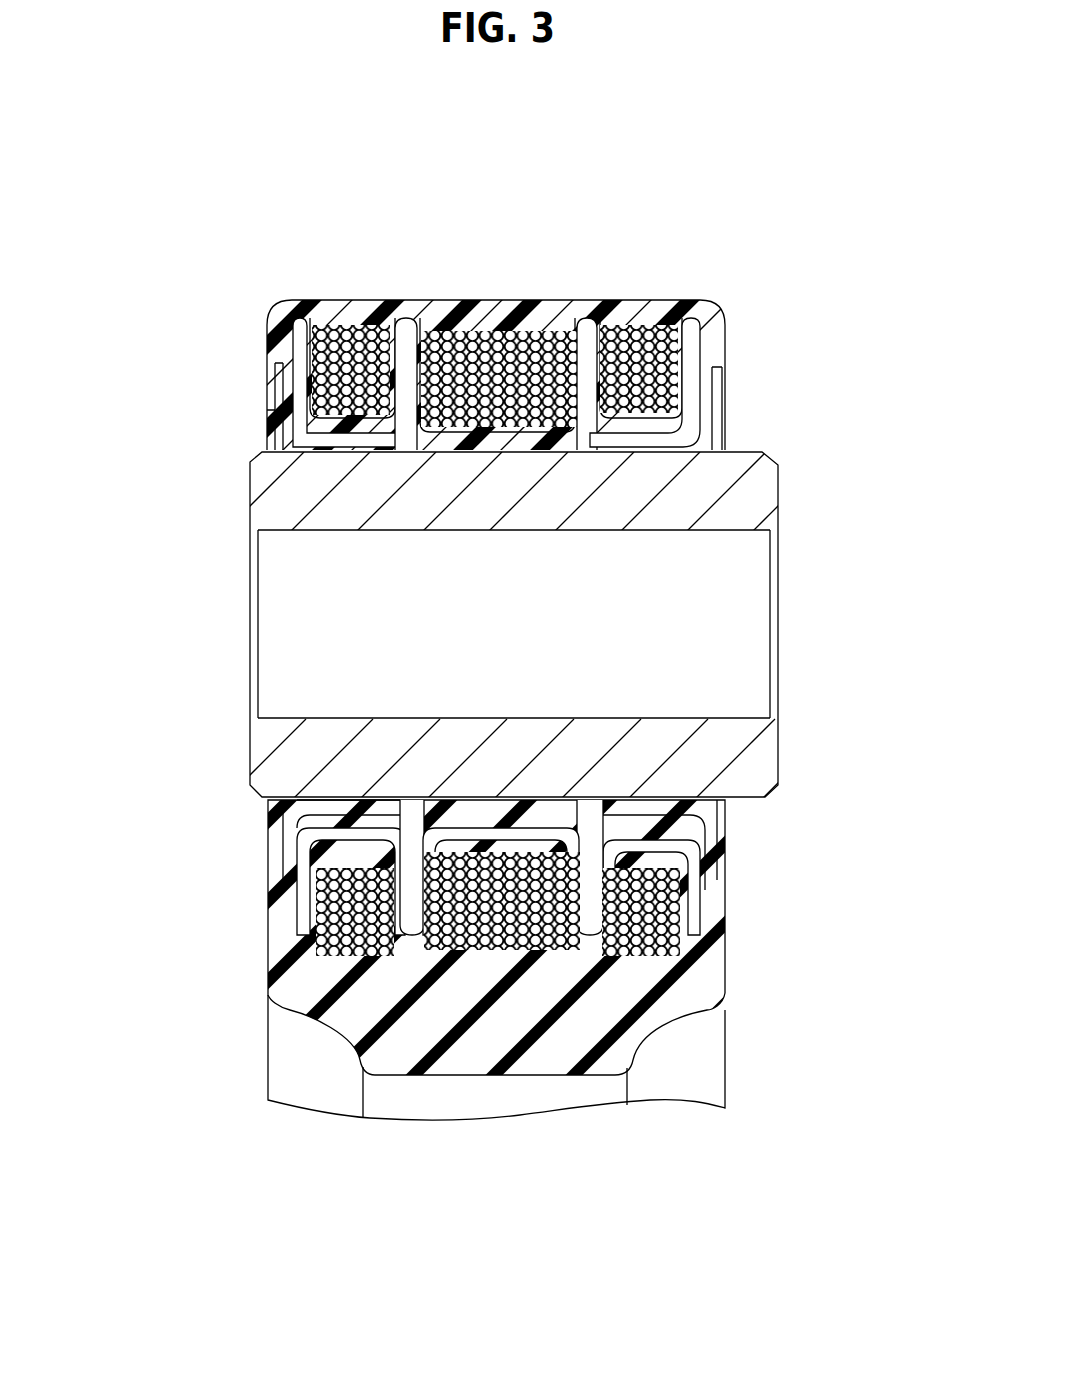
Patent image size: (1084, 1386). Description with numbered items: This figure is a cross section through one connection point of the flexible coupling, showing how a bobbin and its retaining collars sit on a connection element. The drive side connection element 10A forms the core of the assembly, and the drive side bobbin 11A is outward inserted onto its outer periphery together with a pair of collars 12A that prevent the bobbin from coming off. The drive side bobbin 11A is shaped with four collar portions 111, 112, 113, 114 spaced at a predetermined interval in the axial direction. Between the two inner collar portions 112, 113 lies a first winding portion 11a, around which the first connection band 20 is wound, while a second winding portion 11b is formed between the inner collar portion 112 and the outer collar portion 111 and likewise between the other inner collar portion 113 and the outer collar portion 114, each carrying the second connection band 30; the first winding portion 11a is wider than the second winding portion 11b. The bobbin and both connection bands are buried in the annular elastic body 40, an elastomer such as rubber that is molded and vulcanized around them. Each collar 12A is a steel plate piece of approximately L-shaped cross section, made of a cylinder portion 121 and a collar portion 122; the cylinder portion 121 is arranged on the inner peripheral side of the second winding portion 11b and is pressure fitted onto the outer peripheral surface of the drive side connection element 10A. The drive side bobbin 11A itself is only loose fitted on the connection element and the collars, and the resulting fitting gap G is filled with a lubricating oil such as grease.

The drive side connection element 10A is at (755, 755).
The drive side bobbin 11A is at (712, 322).
The outer collar portion 111 is at (266, 298).
The inner collar portion 112 is at (405, 298).
The inner collar portion 113 is at (587, 298).
The outer collar portion 114 is at (714, 352).
The first winding portion 11a is at (518, 830).
The second winding portion 11b is at (300, 872).
The collar 12A is at (260, 412).
The cylinder portion 121 is at (352, 815).
The collar portion 122 is at (275, 838).
The first connection band 20 is at (495, 318).
The second connection band 30 is at (340, 315).
The annular elastic body 40 is at (492, 1030).
The fitting gap G is at (466, 462).